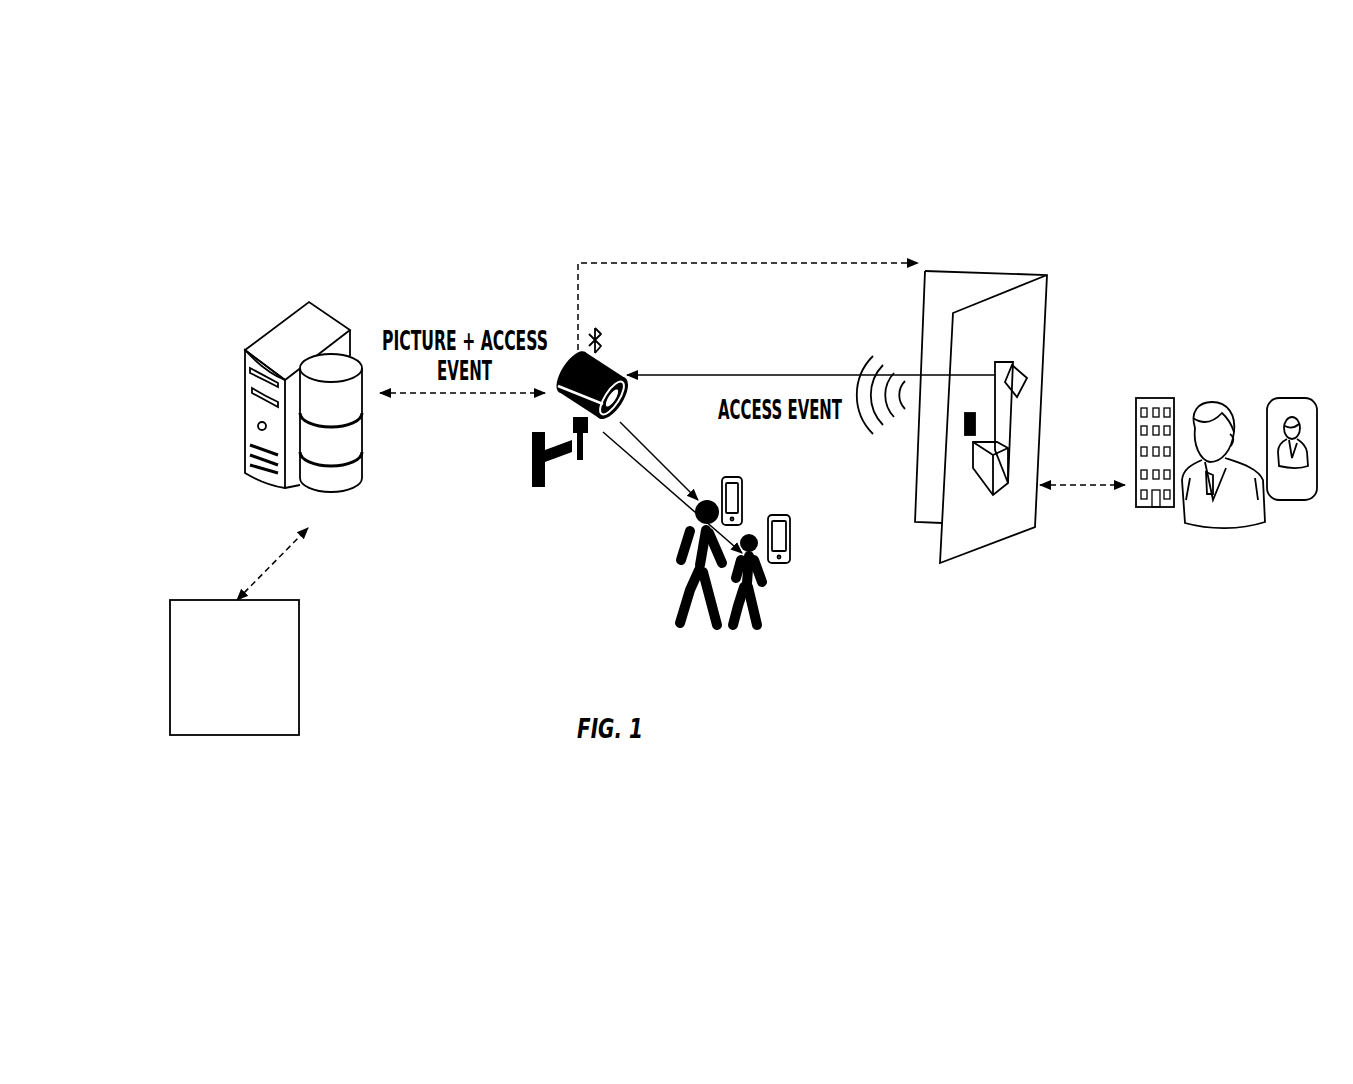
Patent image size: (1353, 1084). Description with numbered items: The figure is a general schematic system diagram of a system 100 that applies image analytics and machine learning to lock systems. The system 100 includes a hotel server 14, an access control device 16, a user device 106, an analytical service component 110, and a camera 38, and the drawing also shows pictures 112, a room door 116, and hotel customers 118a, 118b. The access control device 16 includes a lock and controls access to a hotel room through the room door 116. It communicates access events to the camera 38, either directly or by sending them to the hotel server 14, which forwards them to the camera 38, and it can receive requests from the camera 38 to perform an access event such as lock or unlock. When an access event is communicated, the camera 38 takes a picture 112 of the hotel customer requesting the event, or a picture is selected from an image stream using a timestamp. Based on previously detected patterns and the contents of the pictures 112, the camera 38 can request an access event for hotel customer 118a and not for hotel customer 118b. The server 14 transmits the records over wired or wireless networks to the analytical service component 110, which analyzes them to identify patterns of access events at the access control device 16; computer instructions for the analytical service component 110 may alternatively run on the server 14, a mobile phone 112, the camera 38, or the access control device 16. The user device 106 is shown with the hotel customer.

The system 100 is at (140, 439).
The server 14 is at (327, 325).
The analytical service component 110 is at (299, 657).
The camera 38 is at (571, 506).
The picture 112 is at (733, 490).
The hotel customer 118a is at (757, 611).
The hotel customer 118b is at (681, 611).
The room door 116 is at (993, 575).
The access control device 16 is at (1000, 484).
The user device 106 is at (1162, 402).